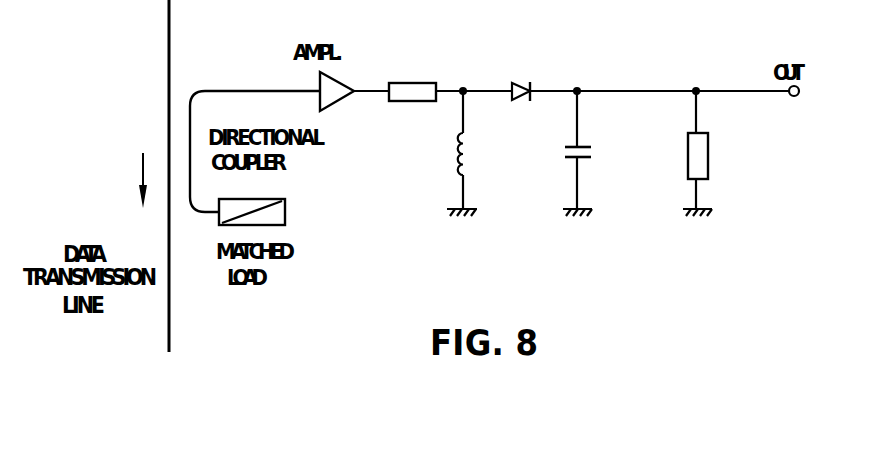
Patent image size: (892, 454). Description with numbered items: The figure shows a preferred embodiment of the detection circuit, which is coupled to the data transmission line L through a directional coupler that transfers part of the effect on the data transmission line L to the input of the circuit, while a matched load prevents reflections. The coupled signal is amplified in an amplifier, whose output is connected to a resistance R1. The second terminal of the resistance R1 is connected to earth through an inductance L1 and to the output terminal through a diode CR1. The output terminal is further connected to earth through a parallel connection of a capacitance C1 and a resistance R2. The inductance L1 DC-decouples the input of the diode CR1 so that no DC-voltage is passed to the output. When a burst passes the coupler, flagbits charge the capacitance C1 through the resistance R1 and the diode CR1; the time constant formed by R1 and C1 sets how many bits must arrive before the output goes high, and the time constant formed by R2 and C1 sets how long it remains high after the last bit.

The data transmission line L is at (182, 177).
The resistance R1 is at (412, 76).
The inductance L1 is at (471, 151).
The diode CR1 is at (517, 76).
The capacitance C1 is at (589, 151).
The resistance R2 is at (710, 151).